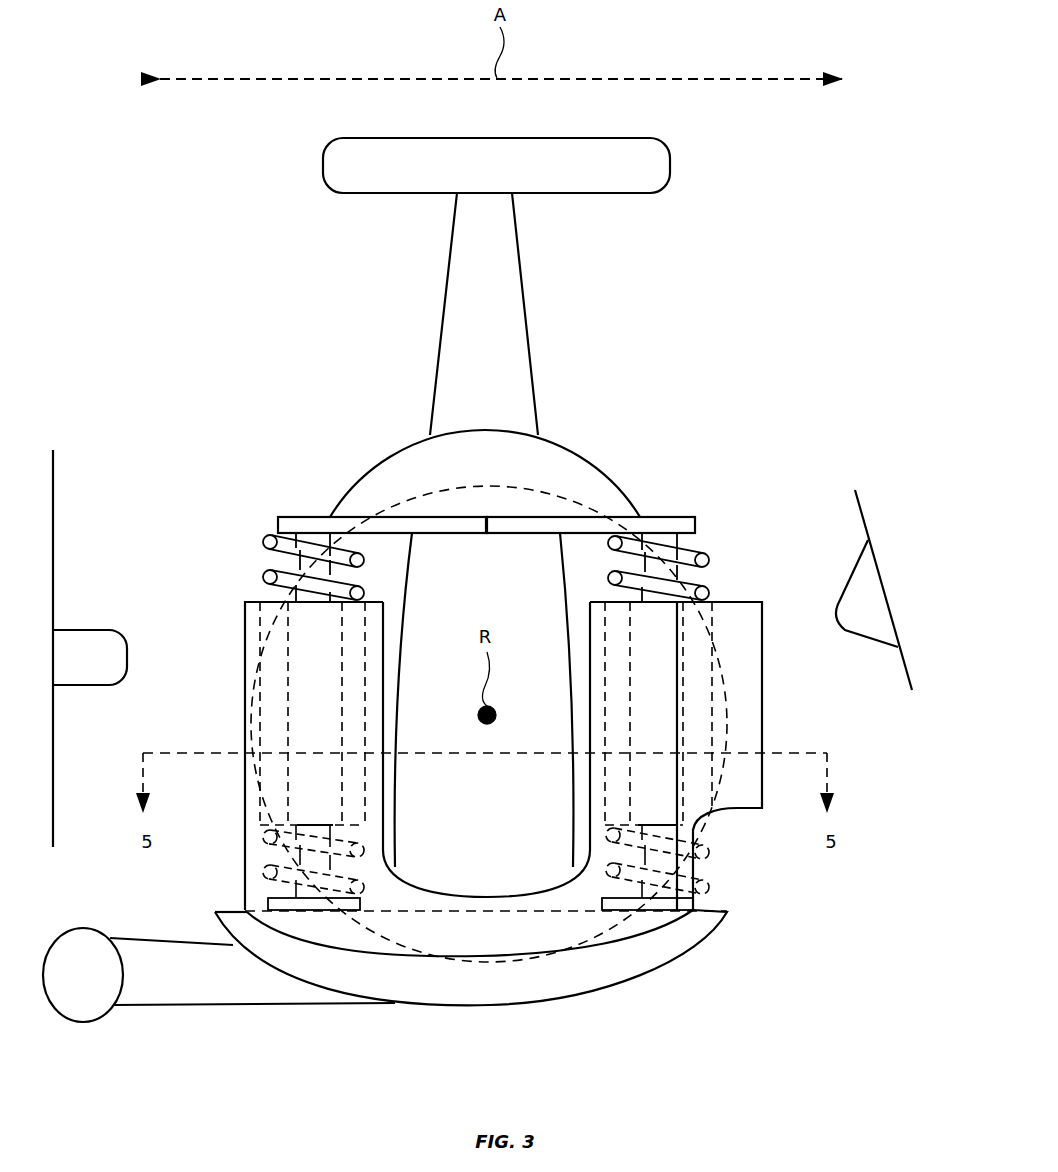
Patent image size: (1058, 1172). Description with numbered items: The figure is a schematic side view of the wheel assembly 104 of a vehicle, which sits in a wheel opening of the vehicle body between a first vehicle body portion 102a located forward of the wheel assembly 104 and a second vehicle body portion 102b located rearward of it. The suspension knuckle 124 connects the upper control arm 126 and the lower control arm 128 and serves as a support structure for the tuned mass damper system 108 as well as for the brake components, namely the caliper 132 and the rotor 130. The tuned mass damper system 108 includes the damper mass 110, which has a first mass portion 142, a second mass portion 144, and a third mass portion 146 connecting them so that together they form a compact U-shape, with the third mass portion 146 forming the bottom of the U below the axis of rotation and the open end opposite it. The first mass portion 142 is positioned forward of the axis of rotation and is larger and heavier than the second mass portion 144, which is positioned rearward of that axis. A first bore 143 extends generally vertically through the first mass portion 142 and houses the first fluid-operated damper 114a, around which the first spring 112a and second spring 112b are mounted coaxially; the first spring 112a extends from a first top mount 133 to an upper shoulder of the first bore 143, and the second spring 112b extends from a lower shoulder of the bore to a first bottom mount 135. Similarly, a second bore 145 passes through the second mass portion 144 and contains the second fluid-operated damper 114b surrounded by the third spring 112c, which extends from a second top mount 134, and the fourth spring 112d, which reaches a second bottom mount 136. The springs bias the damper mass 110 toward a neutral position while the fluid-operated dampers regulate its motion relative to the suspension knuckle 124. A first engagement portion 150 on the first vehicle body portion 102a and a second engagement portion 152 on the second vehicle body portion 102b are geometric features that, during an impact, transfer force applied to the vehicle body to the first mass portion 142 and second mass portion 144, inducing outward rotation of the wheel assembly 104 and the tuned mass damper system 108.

The wheel assembly 104 is at (160, 304).
The tuned mass damper system 108 is at (801, 518).
The damper mass 110 is at (212, 878).
The first vehicle body portion 102a is at (53, 557).
The second vehicle body portion 102b is at (862, 520).
The first spring 112a is at (263, 578).
The second spring 112b is at (263, 842).
The third spring 112c is at (710, 560).
The fourth spring 112d is at (710, 856).
The first fluid-operated damper 114a is at (262, 738).
The second fluid-operated damper 114b is at (700, 722).
The suspension knuckle 124 is at (452, 275).
The upper control arm 126 is at (323, 169).
The lower control arm 128 is at (240, 1005).
The rotor 130 is at (598, 937).
The caliper 132 is at (382, 462).
The first top mount 133 is at (278, 523).
The second top mount 134 is at (695, 526).
The first bottom mount 135 is at (268, 903).
The second bottom mount 136 is at (700, 903).
The first mass portion 142 is at (245, 800).
The first bore 143 is at (245, 678).
The second mass portion 144 is at (755, 676).
The second bore 145 is at (712, 642).
The third mass portion 146 is at (500, 925).
The first engagement portion 150 is at (80, 688).
The second engagement portion 152 is at (875, 655).